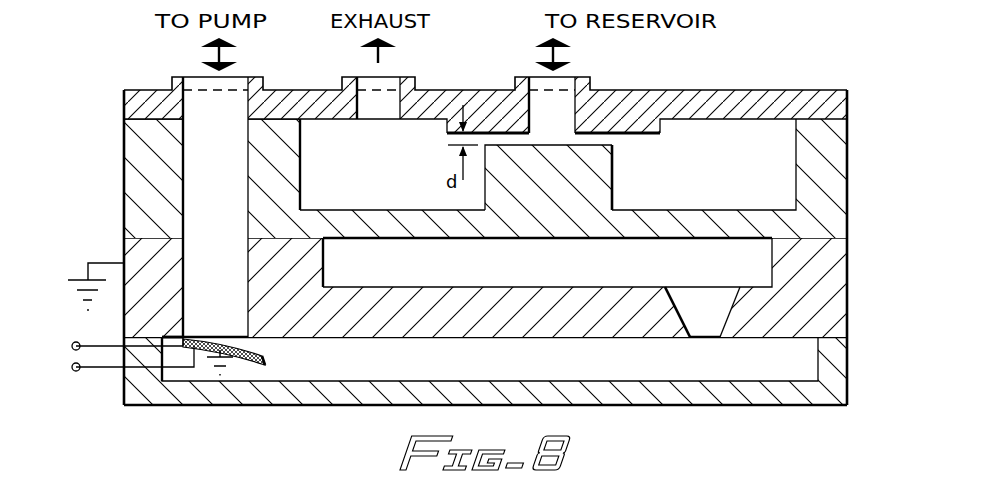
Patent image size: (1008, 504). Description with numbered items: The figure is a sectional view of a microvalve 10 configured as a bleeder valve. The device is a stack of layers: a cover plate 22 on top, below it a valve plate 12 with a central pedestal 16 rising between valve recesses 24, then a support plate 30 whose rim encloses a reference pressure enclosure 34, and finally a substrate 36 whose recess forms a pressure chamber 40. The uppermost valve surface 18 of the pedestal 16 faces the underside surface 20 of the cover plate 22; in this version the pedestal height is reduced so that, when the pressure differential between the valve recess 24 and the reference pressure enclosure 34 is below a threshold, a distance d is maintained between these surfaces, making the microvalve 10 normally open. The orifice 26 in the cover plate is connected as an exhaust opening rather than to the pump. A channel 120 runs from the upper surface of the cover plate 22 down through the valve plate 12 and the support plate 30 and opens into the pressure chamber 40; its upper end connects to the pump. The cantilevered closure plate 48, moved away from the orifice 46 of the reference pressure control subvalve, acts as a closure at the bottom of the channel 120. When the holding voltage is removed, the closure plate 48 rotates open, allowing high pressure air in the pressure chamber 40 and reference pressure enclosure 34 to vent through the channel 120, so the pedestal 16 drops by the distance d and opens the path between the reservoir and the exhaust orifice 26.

The microvalve 10 is at (791, 74).
The valve plate 12 is at (868, 237).
The central pedestal 16 is at (598, 190).
The valve surface 18 is at (592, 132).
The underside surface 20 is at (645, 133).
The cover plate 22 is at (848, 106).
The valve recess 24 is at (397, 181).
The orifice 26 is at (388, 79).
The support plate 30 is at (868, 337).
The reference pressure enclosure 34 is at (555, 274).
The substrate 36 is at (868, 339).
The pressure chamber 40 is at (557, 370).
The orifice 46 is at (703, 305).
The cantilevered closure plate 48 is at (280, 353).
The channel 120 is at (237, 190).